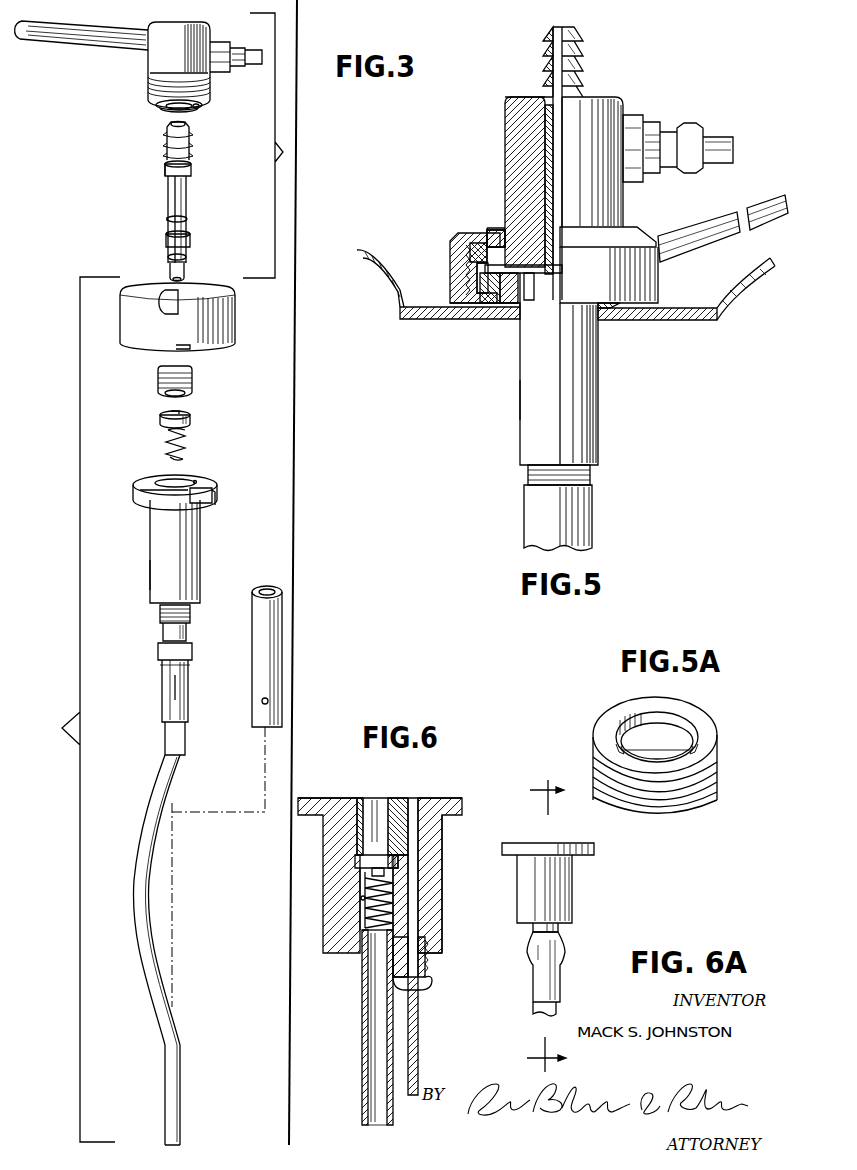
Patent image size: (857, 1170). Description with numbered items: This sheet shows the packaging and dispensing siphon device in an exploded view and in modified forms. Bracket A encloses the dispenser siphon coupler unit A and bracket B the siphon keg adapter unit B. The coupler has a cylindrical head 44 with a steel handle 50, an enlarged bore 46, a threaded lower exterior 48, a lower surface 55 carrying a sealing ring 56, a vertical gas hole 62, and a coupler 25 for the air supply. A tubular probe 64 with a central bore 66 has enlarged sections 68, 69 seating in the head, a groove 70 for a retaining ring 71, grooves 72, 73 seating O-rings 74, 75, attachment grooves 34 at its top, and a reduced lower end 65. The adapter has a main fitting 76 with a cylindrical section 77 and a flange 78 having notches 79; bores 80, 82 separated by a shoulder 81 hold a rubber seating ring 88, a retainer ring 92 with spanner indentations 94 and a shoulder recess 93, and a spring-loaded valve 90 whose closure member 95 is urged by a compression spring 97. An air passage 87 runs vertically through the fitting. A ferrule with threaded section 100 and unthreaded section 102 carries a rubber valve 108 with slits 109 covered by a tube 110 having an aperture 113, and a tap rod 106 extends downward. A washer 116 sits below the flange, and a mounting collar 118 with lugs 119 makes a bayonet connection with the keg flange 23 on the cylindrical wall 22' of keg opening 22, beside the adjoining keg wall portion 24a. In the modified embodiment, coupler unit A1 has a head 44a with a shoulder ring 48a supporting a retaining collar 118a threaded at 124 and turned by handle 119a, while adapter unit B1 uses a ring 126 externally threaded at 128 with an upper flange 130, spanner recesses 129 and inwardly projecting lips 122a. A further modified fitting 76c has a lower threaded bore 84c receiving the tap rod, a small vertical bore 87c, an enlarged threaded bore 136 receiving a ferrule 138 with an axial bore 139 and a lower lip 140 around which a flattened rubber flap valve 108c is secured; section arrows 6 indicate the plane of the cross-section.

In FIG. 5A, the section line 6 is at (540, 797).
In FIG. 6A, the section line 6 is at (539, 1054).
In FIG. 3, the dispenser siphon coupler unit A is at (269, 145).
In FIG. 3, the siphon keg adapter unit B is at (80, 709).
In FIG. 5, the beer keg opening 22 is at (505, 317).
In FIG. 5, the short cylindrical wall 22' is at (496, 326).
In FIG. 5, the keg flange 23 is at (493, 290).
In FIG. 5, the flange 24a is at (688, 320).
In FIG. 3, the coupler 25 is at (236, 72).
In FIG. 5, the coupler 25 is at (655, 113).
In FIG. 3, the grooves 34 is at (192, 145).
In FIG. 5, the grooves 34 is at (584, 47).
In FIG. 3, the head portion 44 is at (144, 60).
In FIG. 5, the head member 44a is at (505, 175).
In FIG. 3, the enlarged bore 46 is at (170, 110).
In FIG. 3, the threaded section 48 is at (146, 95).
In FIG. 5, the shoulder-forming ring 48a is at (500, 228).
In FIG. 3, the handle 50 is at (48, 44).
In FIG. 3, the lower surface 55 is at (158, 107).
In FIG. 3, the sealing ring 56 is at (200, 109).
In FIG. 5, the sealing ring 56 is at (533, 275).
In FIG. 3, the small hole 62 is at (195, 111).
In FIG. 3, the probe 64 is at (194, 203).
In FIG. 5, the probe 64 is at (543, 150).
In FIG. 5, the lower end of probe 65 is at (558, 282).
In FIG. 3, the central bore 66 is at (188, 278).
In FIG. 3, the enlarged cylindrical section 68 is at (192, 242).
In FIG. 3, the enlarged section 69 is at (193, 172).
In FIG. 3, the annular groove 70 is at (166, 168).
In FIG. 5, the retaining ring 71 is at (544, 95).
In FIG. 3, the groove 72 is at (188, 218).
In FIG. 3, the groove 73 is at (187, 258).
In FIG. 3, the sealing ring 74 is at (167, 219).
In FIG. 3, the O-ring 75 is at (168, 264).
In FIG. 3, the main fitting 76 is at (203, 546).
In FIG. 5, the main fitting 76 is at (605, 375).
In FIG. 6, the modified main fitting 76c is at (444, 912).
In FIG. 6A, the modified main fitting 76c is at (566, 893).
In FIG. 3, the cylindrical section 77 is at (202, 578).
In FIG. 3, the flange 78 is at (218, 490).
In FIG. 5, the flange 78 is at (545, 275).
In FIG. 6, the flange 78 is at (467, 799).
In FIG. 6A, the flange 78 is at (560, 852).
In FIG. 3, the peripheral notches 79 is at (188, 492).
In FIG. 6, the upper bore 80 is at (352, 832).
In FIG. 6, the shoulder 81 is at (360, 872).
In FIG. 6, the bore 82 is at (361, 901).
In FIG. 6, the lower bore 84c is at (362, 955).
In FIG. 3, the air passage 87 is at (197, 480).
In FIG. 6, the small vertical bore 87c is at (402, 866).
In FIG. 3, the seating ring 88 is at (192, 421).
In FIG. 6, the seating ring 88 is at (400, 862).
In FIG. 3, the valve sub-assembly 90 is at (190, 440).
In FIG. 3, the valve retainer ring 92 is at (194, 380).
In FIG. 6, the valve retainer ring 92 is at (386, 800).
In FIG. 3, the shoulder recess 93 is at (166, 392).
In FIG. 6, the indentations 94 is at (407, 798).
In FIG. 6, the valve closure member 95 is at (388, 878).
In FIG. 3, the compression spring 97 is at (166, 452).
In FIG. 6, the compression spring 97 is at (395, 896).
In FIG. 3, the threaded ferrule section 100 is at (160, 620).
In FIG. 5, the threaded ferrule section 100 is at (592, 476).
In FIG. 3, the cylindrical ferrule section 102 is at (187, 632).
In FIG. 3, the tap rod 106 is at (150, 930).
In FIG. 6, the tap rod 106 is at (362, 1045).
In FIG. 6A, the tap rod 106 is at (550, 1006).
In FIG. 3, the rubber valve 108 is at (188, 685).
In FIG. 6, the one-way gas valve 108c is at (430, 988).
In FIG. 6A, the one-way gas valve 108c is at (554, 983).
In FIG. 3, the longitudinal slits 109 is at (172, 683).
In FIG. 3, the hollow member 110 is at (256, 650).
In FIG. 5, the hollow member 110 is at (597, 514).
In FIG. 3, the aperture 113 is at (262, 705).
In FIG. 3, the annular washer 116 is at (213, 505).
In FIG. 5, the annular washer 116 is at (456, 312).
In FIG. 3, the mounting collar 118 is at (237, 321).
In FIG. 5, the retaining collar 118a is at (452, 283).
In FIG. 3, the external lugs 119 is at (162, 302).
In FIG. 5, the turning handle 119a is at (702, 254).
In FIG. 5A, the inwardly projecting lips 122a is at (630, 746).
In FIG. 5, the internal threads 124 is at (412, 310).
In FIG. 5, the annular ring 126 is at (455, 258).
In FIG. 5A, the annular ring 126 is at (682, 770).
In FIG. 5A, the external threads 128 is at (694, 800).
In FIG. 5, the aligned recesses 129 is at (452, 241).
In FIG. 5, the upper annular flange 130 is at (486, 240).
In FIG. 5A, the upper annular flange 130 is at (668, 740).
In FIG. 6, the threaded bore 136 is at (430, 946).
In FIG. 6, the ferrule 138 is at (430, 963).
In FIG. 6A, the ferrule 138 is at (560, 938).
In FIG. 6, the axial bore 139 is at (432, 957).
In FIG. 6, the peripheral lower lip 140 is at (434, 983).
In FIG. 5, the dispenser coupler unit A1 is at (498, 131).
In FIG. 5, the adapter unit B1 is at (518, 393).